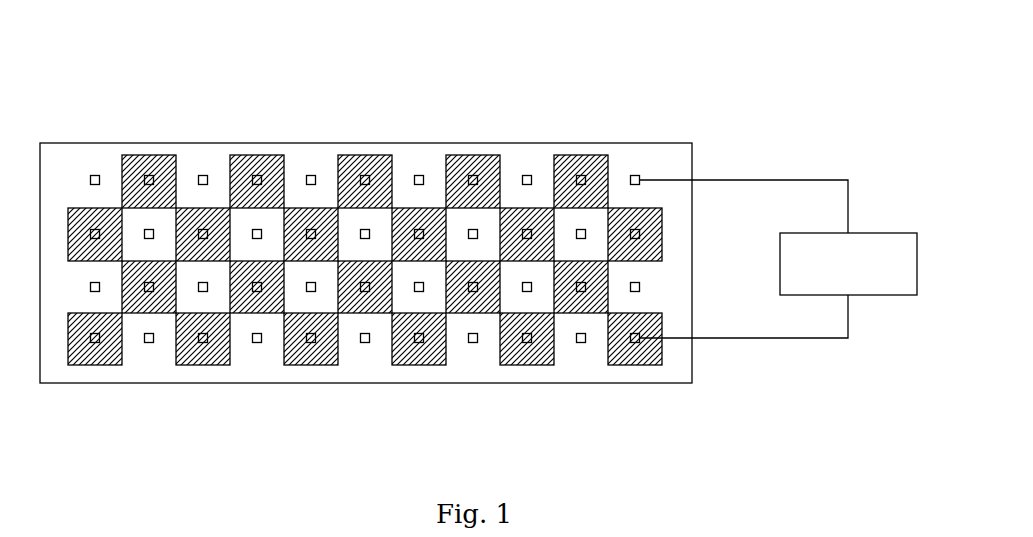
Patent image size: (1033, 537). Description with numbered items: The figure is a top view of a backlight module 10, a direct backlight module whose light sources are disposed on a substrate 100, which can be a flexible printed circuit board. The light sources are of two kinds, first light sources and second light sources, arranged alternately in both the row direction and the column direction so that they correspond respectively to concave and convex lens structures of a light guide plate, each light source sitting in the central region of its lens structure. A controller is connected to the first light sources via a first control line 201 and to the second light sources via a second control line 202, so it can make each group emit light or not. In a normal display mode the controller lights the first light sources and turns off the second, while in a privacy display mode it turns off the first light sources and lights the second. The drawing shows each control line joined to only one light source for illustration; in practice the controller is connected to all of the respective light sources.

The backlight module 10 is at (576, 74).
The substrate 100 is at (525, 365).
The first control line 201 is at (768, 338).
The second control line 202 is at (725, 180).